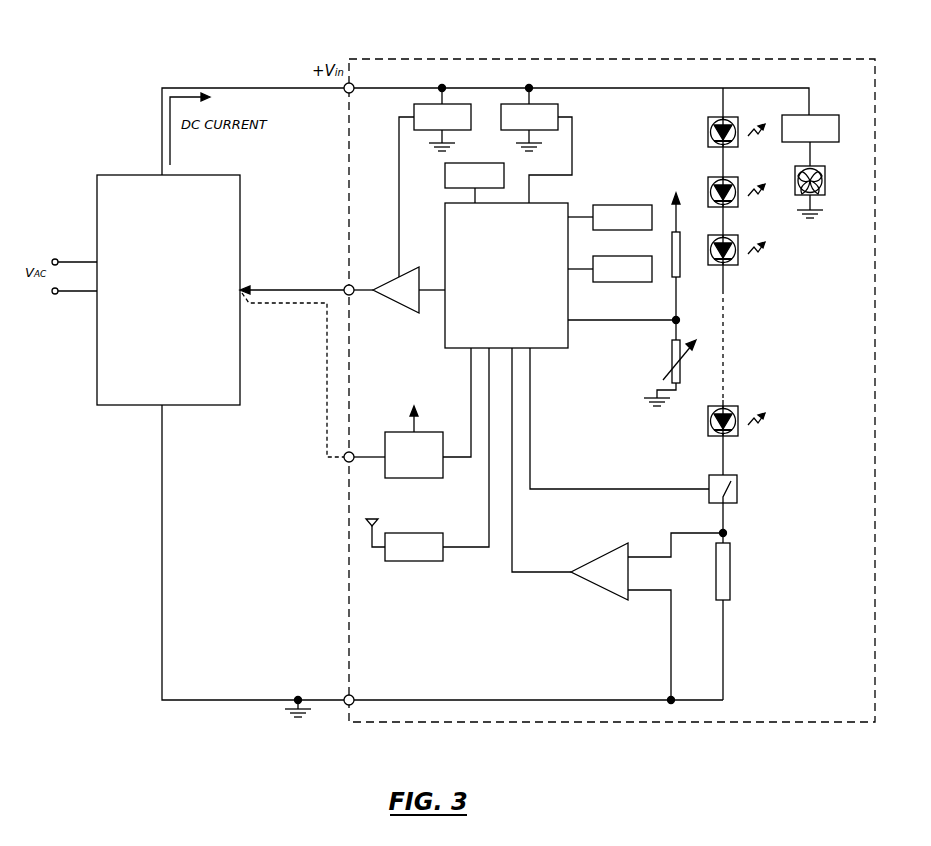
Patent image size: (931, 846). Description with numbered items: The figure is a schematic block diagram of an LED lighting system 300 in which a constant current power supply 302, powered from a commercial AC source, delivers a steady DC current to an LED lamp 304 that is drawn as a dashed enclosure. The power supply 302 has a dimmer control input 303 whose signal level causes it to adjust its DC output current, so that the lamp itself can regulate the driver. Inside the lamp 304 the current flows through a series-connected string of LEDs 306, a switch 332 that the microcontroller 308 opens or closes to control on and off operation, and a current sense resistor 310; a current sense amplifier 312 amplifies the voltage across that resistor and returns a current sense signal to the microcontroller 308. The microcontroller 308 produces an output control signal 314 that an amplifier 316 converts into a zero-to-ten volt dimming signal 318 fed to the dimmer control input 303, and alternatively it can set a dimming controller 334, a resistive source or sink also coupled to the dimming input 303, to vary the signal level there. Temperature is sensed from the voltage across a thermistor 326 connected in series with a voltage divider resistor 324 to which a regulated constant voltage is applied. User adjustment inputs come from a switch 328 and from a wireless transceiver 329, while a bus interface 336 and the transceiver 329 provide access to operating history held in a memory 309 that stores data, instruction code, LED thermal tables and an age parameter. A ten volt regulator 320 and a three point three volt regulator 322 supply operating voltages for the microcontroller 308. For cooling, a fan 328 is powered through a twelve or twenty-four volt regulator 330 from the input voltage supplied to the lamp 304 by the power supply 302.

The LED lighting system 300 is at (109, 34).
The constant current power supply 302 is at (110, 175).
The dimmer control input 303 is at (248, 290).
The LED lamp 304 is at (403, 59).
The LEDs 306 is at (736, 118).
The microcontroller 308 is at (445, 237).
The memory 309 is at (445, 186).
The current sense resistor 310 is at (730, 575).
The current sense amplifier 312 is at (594, 553).
The output control signal 314 is at (432, 292).
The amplifier 316 is at (397, 276).
The dimming signal 318 is at (365, 293).
The 10 volt regulator 320 is at (414, 108).
The 3.3 volt regulator 322 is at (558, 110).
The voltage divider resistor 324 is at (680, 240).
The thermistor 326 is at (666, 360).
The switch / fan 328 is at (602, 205).
The wireless transceiver 329 is at (410, 561).
The 12V/24V regulator 330 is at (813, 115).
The switch 332 is at (737, 492).
The dimming controller 334 is at (414, 478).
The bus interface 336 is at (625, 282).